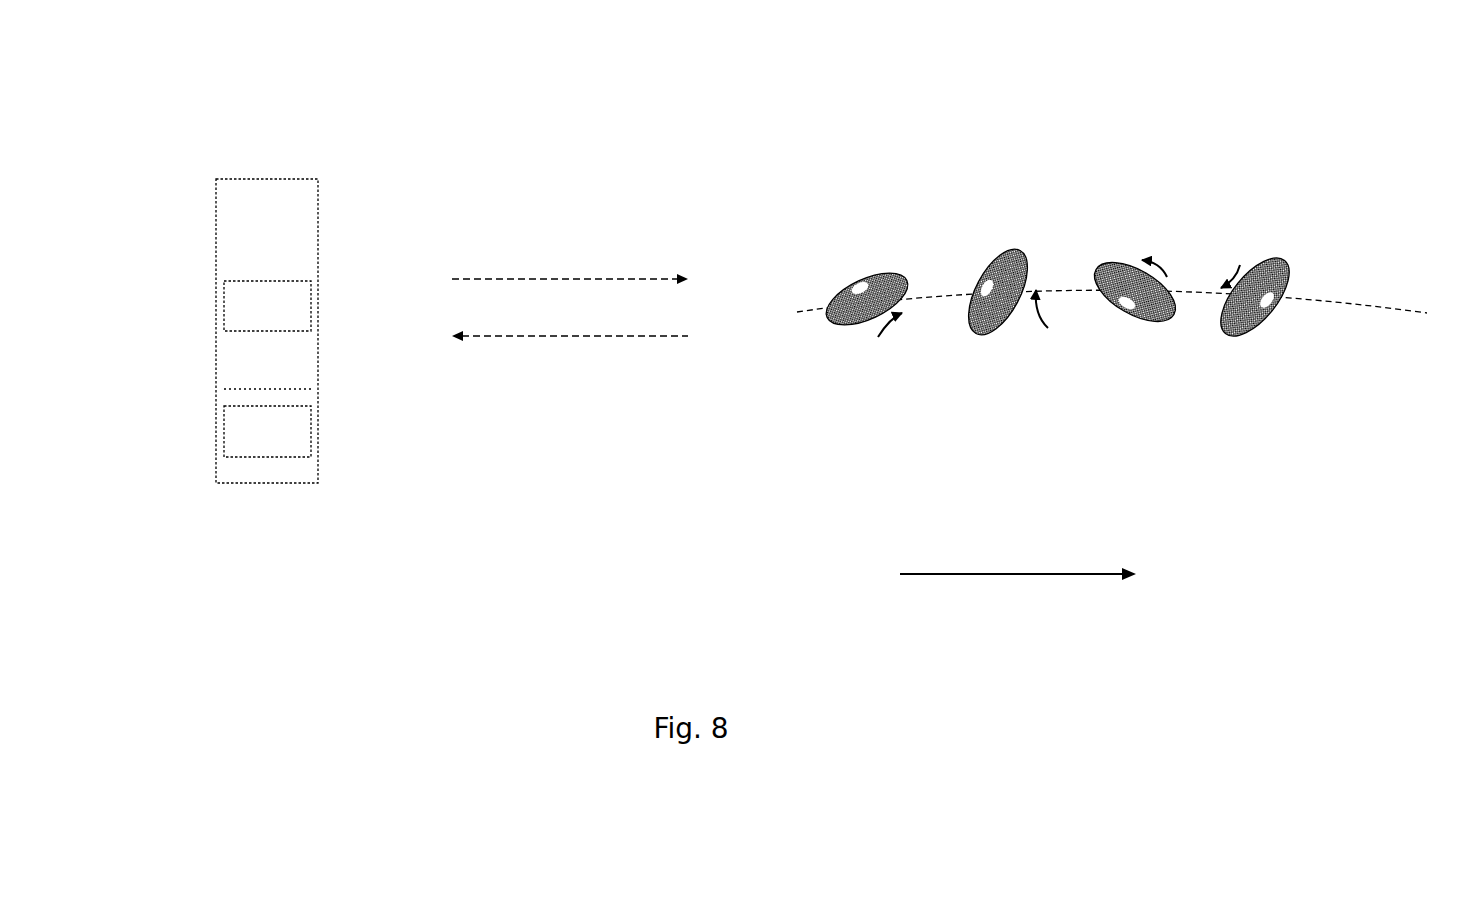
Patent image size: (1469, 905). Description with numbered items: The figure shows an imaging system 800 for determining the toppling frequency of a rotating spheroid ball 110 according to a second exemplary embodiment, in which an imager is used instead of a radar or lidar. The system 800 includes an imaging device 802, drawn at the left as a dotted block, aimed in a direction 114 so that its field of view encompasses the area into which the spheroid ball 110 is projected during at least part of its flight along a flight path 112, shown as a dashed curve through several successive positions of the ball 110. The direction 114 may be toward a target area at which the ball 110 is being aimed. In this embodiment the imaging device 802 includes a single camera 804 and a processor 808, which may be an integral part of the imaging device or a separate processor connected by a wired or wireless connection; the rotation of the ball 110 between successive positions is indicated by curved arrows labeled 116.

The imaging system 800 is at (522, 142).
The imaging device 802 is at (242, 179).
The single camera 804 is at (267, 306).
The processor 808 is at (267, 431).
The spheroid ball 110 is at (855, 278).
The flight path 112 is at (1335, 302).
The direction 114 is at (1033, 574).
The rotation of object 116 is at (1240, 263).